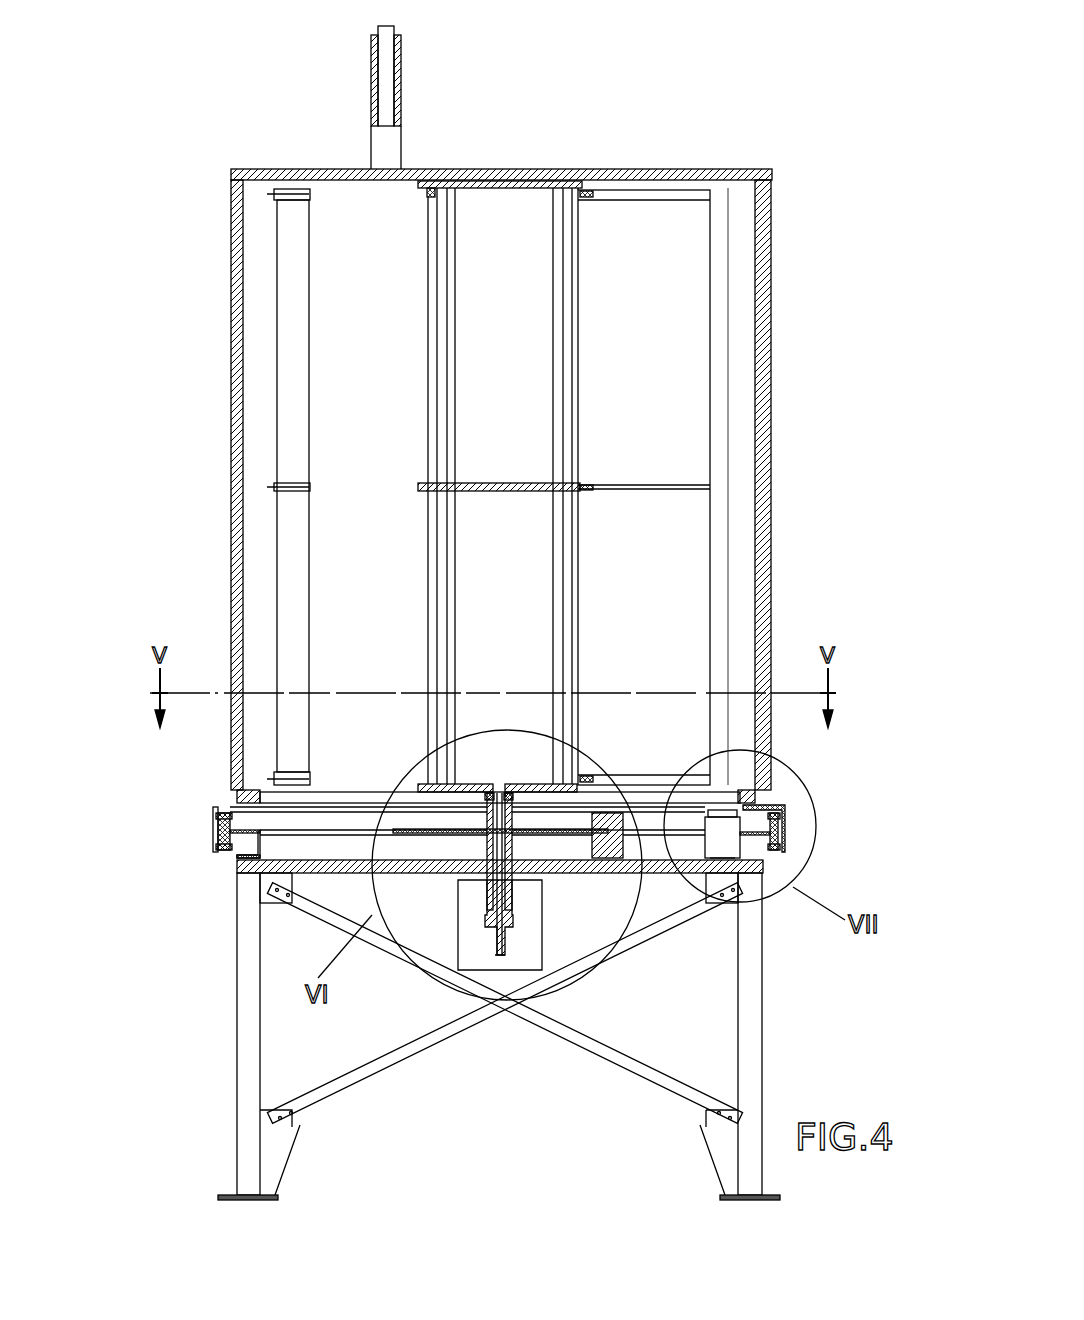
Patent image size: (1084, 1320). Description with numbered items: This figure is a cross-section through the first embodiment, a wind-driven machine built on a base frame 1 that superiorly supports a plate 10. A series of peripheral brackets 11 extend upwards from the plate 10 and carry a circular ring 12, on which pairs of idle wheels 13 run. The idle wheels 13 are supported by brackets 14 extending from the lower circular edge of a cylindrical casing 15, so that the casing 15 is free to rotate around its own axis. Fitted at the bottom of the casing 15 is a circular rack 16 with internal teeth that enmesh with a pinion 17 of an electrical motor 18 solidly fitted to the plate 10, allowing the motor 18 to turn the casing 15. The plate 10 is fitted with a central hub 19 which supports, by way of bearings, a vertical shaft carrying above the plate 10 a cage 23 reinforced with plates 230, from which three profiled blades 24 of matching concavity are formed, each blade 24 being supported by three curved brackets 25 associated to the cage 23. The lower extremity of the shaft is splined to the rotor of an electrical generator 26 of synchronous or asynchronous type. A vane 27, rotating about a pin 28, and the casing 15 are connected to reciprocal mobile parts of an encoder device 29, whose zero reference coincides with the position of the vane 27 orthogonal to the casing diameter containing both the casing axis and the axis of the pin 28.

The base frame 1 is at (750, 1081).
The plate 10 is at (240, 866).
The peripheral brackets 11 is at (263, 850).
The circular ring 12 is at (218, 830).
The idle wheels 13 is at (215, 818).
The brackets 14 is at (215, 808).
The cylindrical casing 15 is at (231, 445).
The circular rack 16 is at (735, 797).
The pinion 17 is at (715, 815).
The electrical motor 18 is at (725, 870).
The central hub 19 is at (483, 852).
The cage 23 is at (445, 605).
The profiled blades 24 is at (296, 357).
The curved brackets 25 is at (660, 195).
The electrical generator 26 is at (522, 960).
The vane 27 is at (371, 88).
The pin 28 is at (386, 62).
The encoder device 29 is at (605, 860).
The plates 230 is at (505, 190).